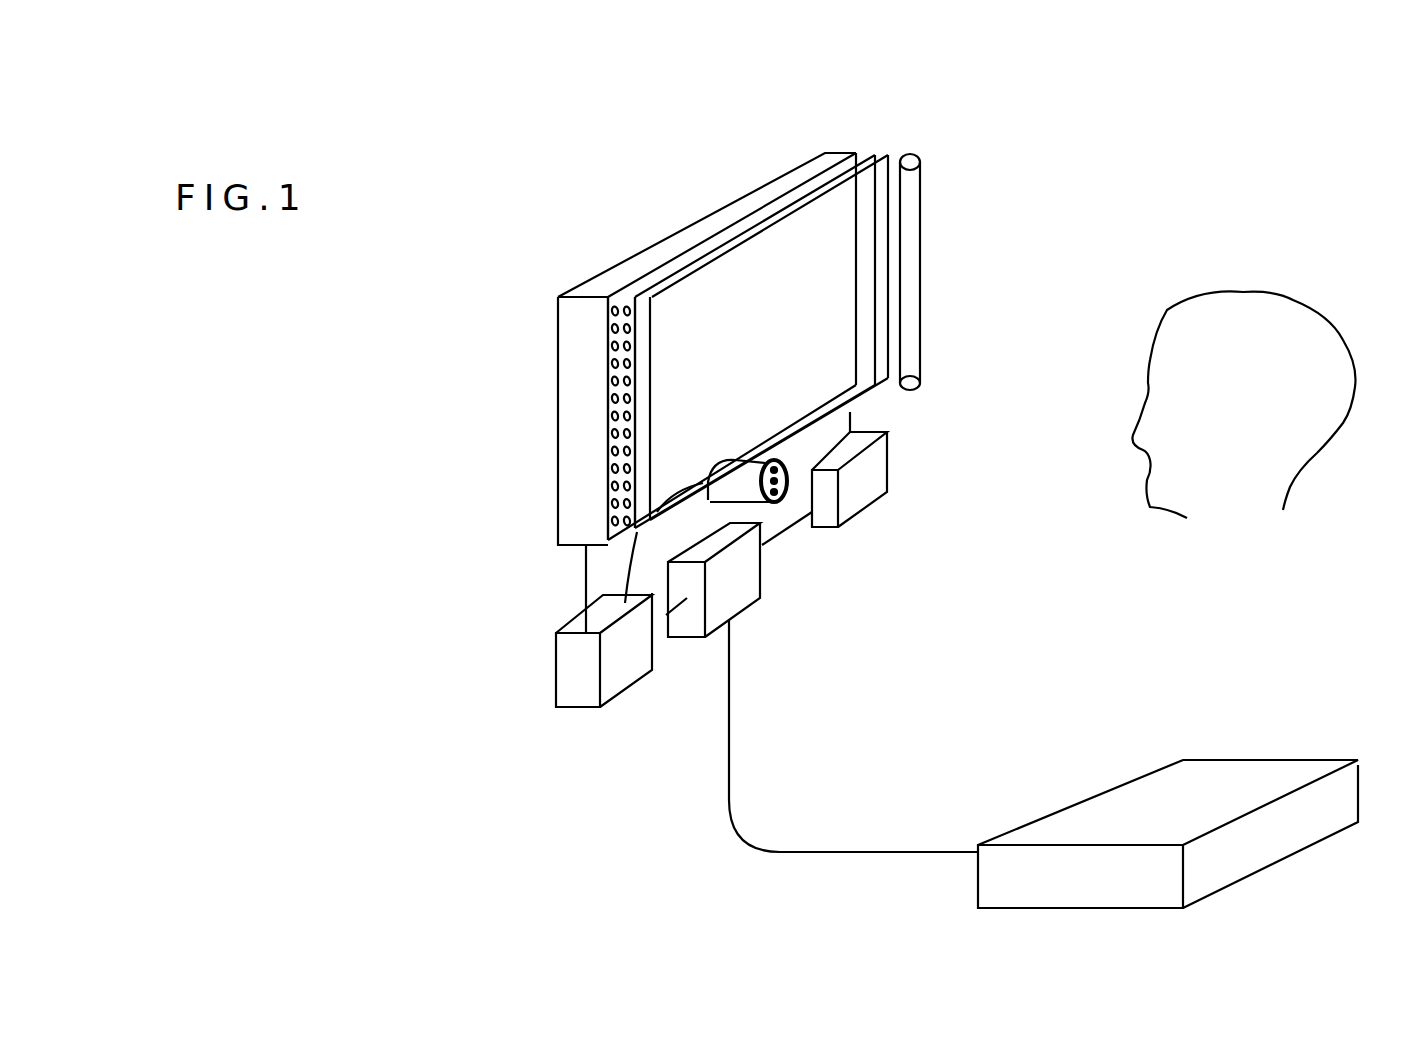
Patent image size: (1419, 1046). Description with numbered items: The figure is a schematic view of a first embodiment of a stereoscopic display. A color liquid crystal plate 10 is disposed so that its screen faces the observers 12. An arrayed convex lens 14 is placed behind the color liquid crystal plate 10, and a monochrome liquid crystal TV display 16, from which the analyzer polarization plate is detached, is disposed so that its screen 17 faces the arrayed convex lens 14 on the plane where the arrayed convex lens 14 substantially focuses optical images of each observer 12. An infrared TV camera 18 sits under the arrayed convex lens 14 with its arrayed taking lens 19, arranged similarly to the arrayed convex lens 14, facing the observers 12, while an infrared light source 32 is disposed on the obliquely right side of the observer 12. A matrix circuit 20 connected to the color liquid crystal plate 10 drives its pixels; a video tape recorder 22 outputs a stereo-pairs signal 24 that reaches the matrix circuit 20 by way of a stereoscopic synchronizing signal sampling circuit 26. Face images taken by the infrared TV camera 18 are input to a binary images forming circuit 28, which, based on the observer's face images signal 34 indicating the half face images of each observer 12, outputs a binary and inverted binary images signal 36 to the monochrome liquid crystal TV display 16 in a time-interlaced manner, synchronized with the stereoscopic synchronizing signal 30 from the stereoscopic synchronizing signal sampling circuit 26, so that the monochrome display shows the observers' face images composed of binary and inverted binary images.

The color liquid crystal plate 10 is at (898, 148).
The observer 12 is at (1332, 495).
The arrayed convex lens 14 is at (549, 327).
The monochrome liquid crystal TV display 16 is at (552, 375).
The screen 17 is at (612, 400).
The infrared TV camera 18 is at (790, 482).
The arrayed taking lens 19 is at (850, 425).
The matrix circuit 20 is at (897, 467).
The video tape recorder 22 is at (1148, 798).
The stereo-pairs signal 24 is at (803, 530).
The stereoscopic synchronizing signal sampling circuit 26 is at (760, 600).
The binary images forming circuit 28 is at (580, 708).
The stereoscopic synchronizing signal 30 is at (673, 636).
The infrared light source 32 is at (930, 222).
The observer's face images signal 34 is at (620, 568).
The binary and inverted binary images signal 36 is at (578, 583).